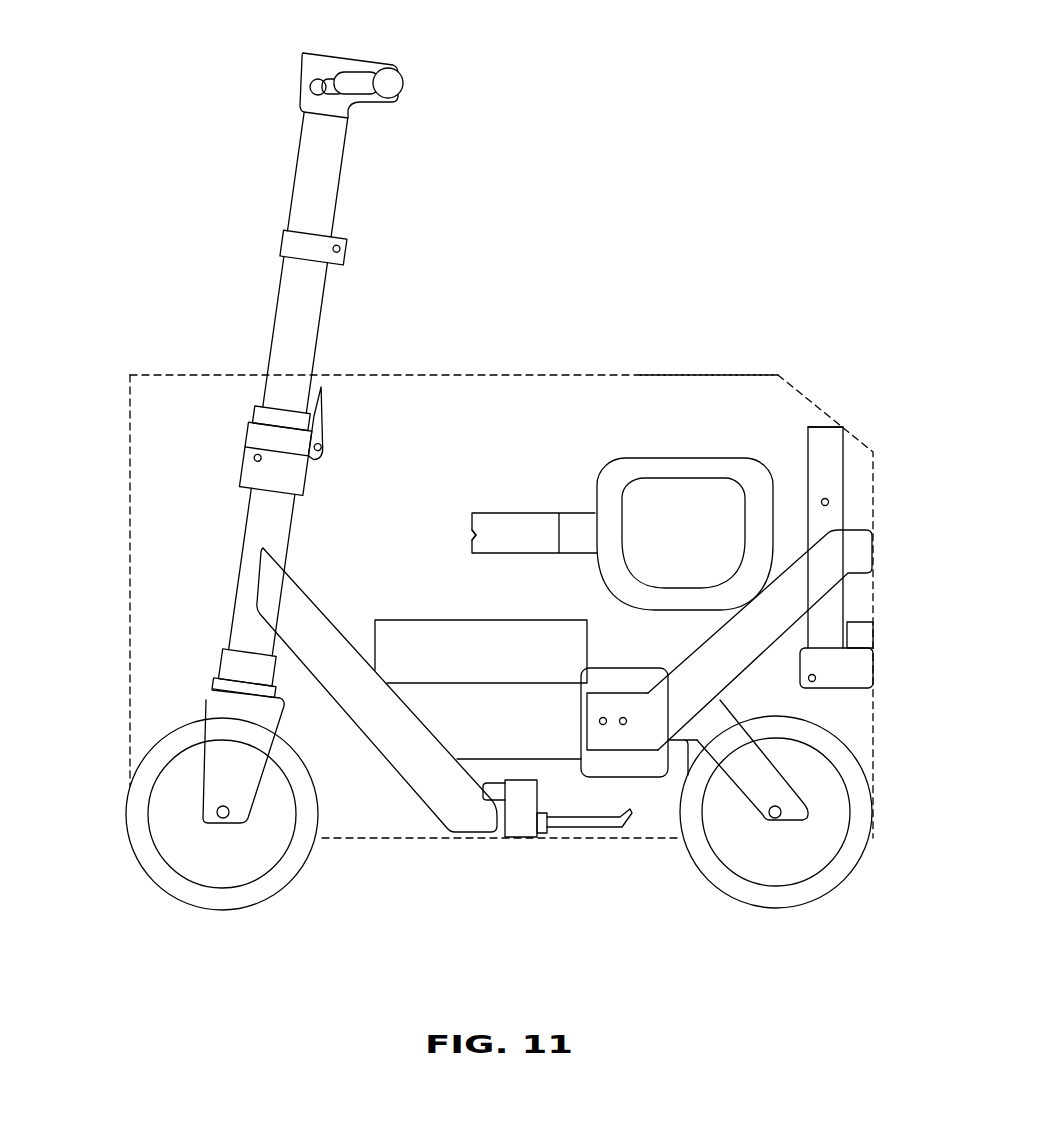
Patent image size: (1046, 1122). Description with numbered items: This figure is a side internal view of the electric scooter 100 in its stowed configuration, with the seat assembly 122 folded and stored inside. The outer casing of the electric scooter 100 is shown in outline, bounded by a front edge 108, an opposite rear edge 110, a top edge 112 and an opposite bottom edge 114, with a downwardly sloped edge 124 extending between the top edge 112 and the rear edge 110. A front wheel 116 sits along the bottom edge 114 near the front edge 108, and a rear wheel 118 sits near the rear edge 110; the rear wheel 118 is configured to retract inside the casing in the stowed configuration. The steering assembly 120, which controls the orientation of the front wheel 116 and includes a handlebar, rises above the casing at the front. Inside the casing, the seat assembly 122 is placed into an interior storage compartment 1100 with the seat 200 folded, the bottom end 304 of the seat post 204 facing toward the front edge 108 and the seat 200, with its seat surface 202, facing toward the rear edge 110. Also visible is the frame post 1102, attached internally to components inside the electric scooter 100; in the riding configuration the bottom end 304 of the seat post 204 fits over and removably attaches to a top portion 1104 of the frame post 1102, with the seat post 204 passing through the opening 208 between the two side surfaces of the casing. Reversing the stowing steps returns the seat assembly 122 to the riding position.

The electric scooter 100 is at (668, 163).
The front edge 108 is at (128, 594).
The rear edge 110 is at (873, 712).
The top edge 112 is at (512, 373).
The bottom edge 114 is at (475, 840).
The front wheel 116 is at (223, 910).
The rear wheel 118 is at (775, 910).
The steering assembly 120 is at (277, 205).
The seat assembly 122 is at (569, 495).
The sloped edge 124 is at (826, 424).
The seat 200 is at (685, 457).
The seat surface 202 is at (663, 541).
The seat post 204 is at (525, 512).
The opening 208 is at (718, 370).
The bottom end 304 is at (470, 522).
The interior storage compartment 1100 is at (481, 602).
The frame post 1102 is at (843, 455).
The top portion 1104 is at (828, 427).